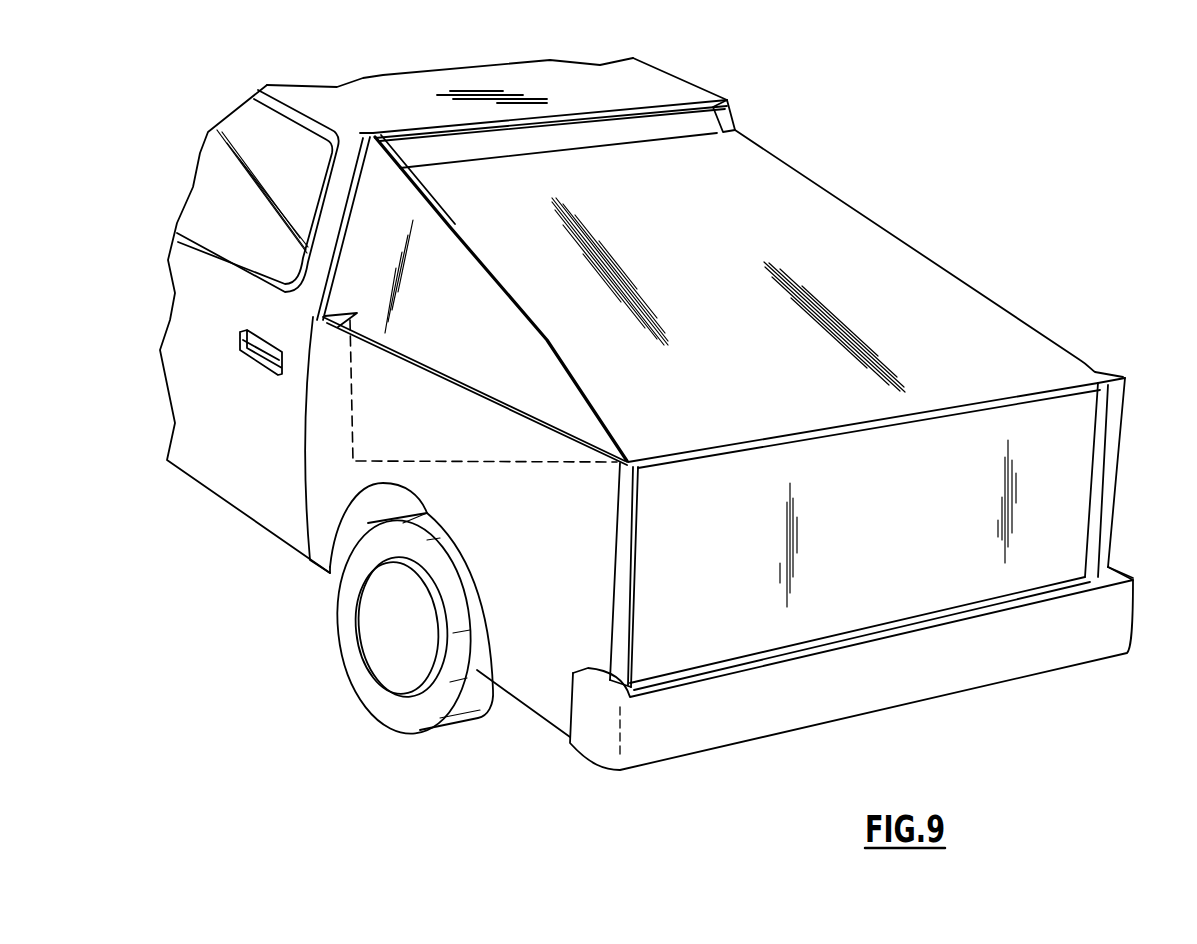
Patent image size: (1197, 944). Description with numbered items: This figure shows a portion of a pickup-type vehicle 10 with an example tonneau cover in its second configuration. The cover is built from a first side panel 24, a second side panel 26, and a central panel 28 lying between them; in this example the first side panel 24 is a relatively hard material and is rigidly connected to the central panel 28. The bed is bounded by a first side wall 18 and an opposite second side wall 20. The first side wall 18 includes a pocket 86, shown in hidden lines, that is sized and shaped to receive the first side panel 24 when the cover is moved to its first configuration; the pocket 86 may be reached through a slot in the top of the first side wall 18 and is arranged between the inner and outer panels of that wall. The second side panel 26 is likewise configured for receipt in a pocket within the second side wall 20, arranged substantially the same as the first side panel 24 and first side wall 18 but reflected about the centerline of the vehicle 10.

The vehicle 10 is at (986, 74).
The first side wall 18 is at (495, 608).
The second side wall 20 is at (1092, 354).
The first side panel 24 is at (385, 282).
The second side panel 26 is at (960, 266).
The central panel 28 is at (778, 191).
The pocket 86 is at (493, 453).